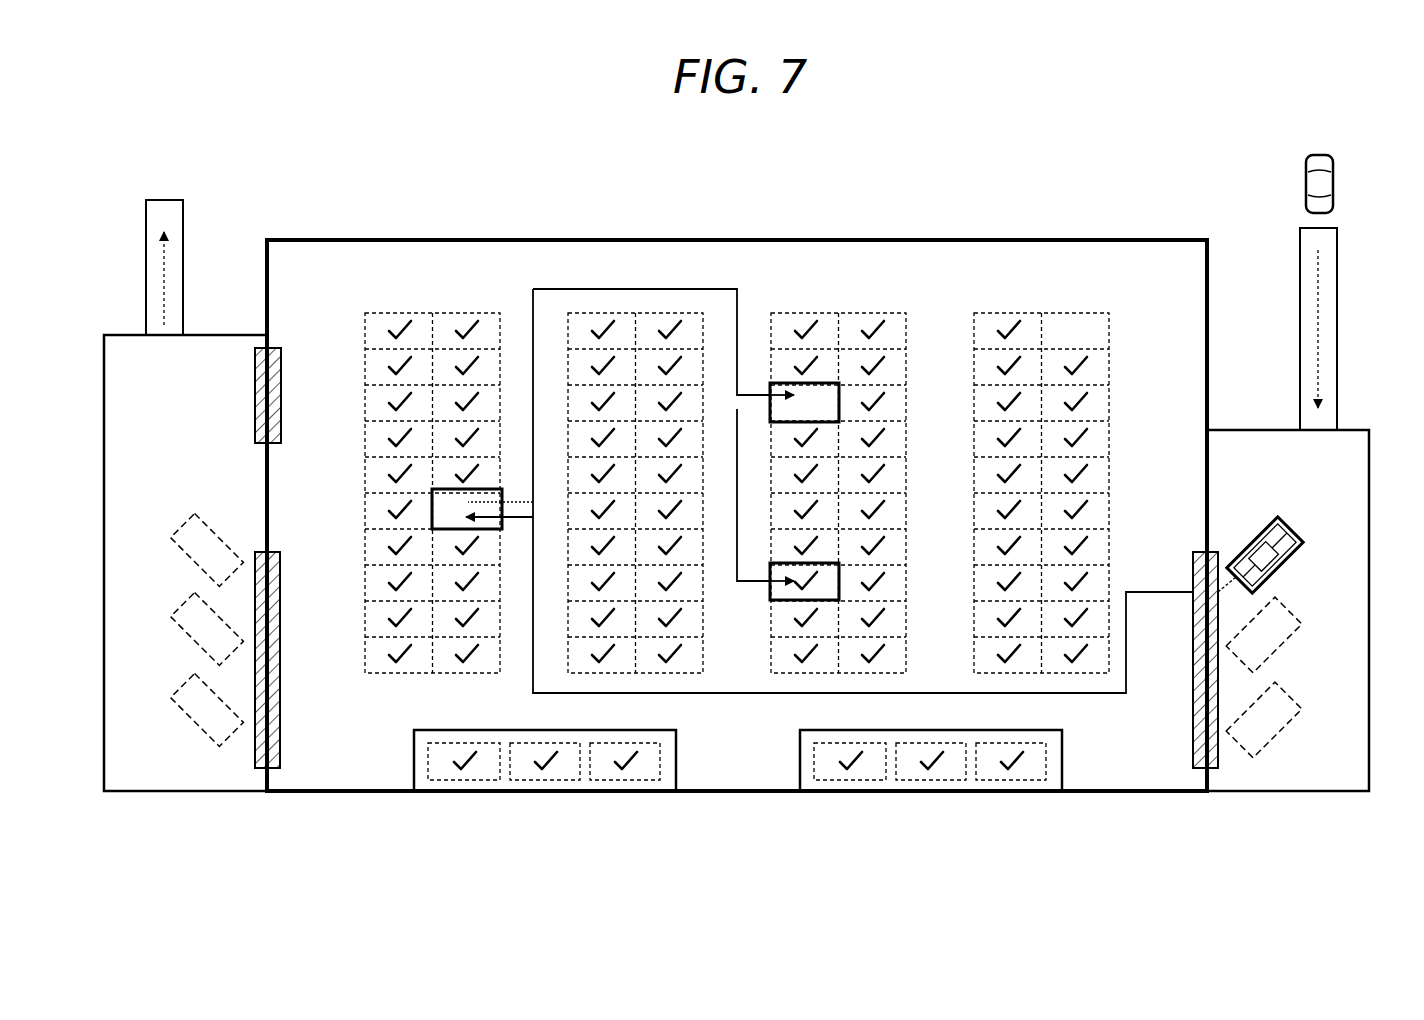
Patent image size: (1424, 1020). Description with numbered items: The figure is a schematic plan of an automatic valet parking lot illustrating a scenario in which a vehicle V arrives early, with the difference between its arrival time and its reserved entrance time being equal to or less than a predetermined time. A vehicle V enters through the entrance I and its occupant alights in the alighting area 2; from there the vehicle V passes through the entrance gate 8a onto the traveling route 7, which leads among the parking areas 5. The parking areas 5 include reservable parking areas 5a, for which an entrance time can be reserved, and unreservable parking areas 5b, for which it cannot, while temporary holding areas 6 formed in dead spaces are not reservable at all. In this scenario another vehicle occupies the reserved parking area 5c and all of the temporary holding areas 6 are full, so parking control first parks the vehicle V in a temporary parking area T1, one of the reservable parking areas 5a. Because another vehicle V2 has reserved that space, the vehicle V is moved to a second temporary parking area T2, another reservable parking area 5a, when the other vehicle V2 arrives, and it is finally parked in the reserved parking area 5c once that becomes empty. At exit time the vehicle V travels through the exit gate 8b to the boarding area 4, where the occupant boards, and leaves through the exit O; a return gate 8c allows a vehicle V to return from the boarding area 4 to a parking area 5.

The exit O is at (146, 223).
The entrance I is at (1338, 243).
The other vehicle V2 is at (1335, 178).
The vehicle V is at (1292, 560).
The alighting area 2 is at (1302, 680).
The boarding area 4 is at (180, 595).
The parking areas 5 is at (831, 528).
The reservable parking areas 5a is at (445, 313).
The unreservable parking areas 5b is at (1065, 313).
The reserved parking area 5c is at (766, 592).
The temporary parking area T1 is at (504, 491).
The temporary parking area T2 is at (770, 384).
The temporary holding areas 6 is at (545, 782).
The traveling route 7 is at (940, 330).
The entrance gate 8a is at (1197, 770).
The exit gate 8b is at (283, 722).
The return gate 8c is at (282, 371).